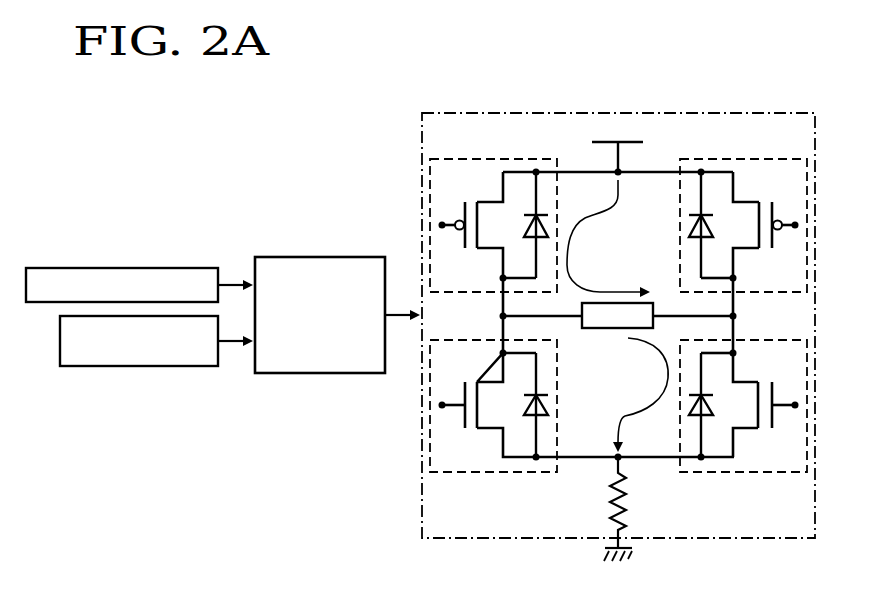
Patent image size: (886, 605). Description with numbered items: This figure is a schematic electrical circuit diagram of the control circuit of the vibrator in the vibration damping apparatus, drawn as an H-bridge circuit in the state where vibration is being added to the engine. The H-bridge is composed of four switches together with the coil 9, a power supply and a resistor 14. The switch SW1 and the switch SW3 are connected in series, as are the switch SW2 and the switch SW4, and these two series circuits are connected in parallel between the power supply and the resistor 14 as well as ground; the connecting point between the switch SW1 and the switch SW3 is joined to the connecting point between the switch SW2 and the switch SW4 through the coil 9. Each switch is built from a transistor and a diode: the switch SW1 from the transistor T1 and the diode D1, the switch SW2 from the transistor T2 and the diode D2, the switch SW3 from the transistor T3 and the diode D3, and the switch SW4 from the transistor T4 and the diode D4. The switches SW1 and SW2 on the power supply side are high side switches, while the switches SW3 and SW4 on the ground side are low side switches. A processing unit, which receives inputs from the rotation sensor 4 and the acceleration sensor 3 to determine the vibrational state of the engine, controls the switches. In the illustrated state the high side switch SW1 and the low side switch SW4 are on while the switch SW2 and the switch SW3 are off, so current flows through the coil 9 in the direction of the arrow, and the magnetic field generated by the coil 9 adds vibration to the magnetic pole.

The acceleration sensor 3 is at (170, 366).
The rotation sensor 4 is at (170, 268).
The switch SW1 is at (493, 213).
The switch SW2 is at (743, 213).
The switch SW3 is at (493, 421).
The switch SW4 is at (743, 422).
The diode D1 is at (547, 214).
The diode D2 is at (694, 238).
The diode D3 is at (549, 395).
The diode D4 is at (691, 415).
The transistor T1 is at (465, 210).
The transistor T2 is at (772, 208).
The transistor T3 is at (465, 425).
The transistor T4 is at (772, 420).
The coil 9 is at (621, 329).
The resistor 14 is at (630, 500).